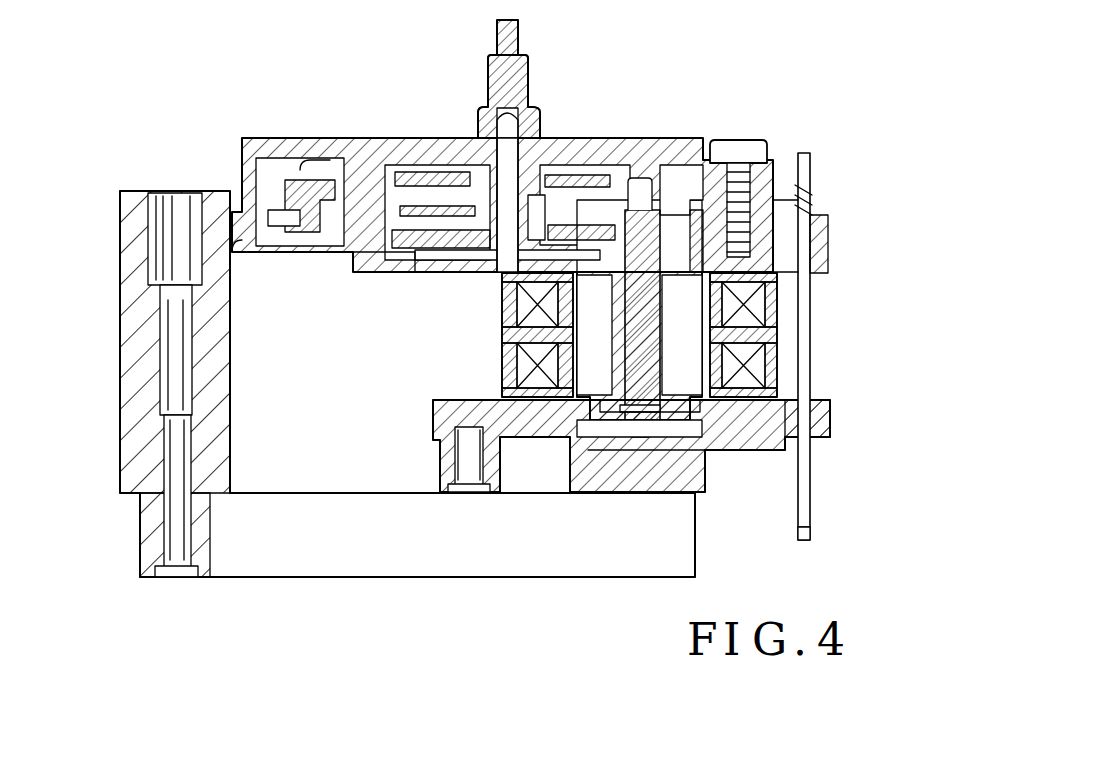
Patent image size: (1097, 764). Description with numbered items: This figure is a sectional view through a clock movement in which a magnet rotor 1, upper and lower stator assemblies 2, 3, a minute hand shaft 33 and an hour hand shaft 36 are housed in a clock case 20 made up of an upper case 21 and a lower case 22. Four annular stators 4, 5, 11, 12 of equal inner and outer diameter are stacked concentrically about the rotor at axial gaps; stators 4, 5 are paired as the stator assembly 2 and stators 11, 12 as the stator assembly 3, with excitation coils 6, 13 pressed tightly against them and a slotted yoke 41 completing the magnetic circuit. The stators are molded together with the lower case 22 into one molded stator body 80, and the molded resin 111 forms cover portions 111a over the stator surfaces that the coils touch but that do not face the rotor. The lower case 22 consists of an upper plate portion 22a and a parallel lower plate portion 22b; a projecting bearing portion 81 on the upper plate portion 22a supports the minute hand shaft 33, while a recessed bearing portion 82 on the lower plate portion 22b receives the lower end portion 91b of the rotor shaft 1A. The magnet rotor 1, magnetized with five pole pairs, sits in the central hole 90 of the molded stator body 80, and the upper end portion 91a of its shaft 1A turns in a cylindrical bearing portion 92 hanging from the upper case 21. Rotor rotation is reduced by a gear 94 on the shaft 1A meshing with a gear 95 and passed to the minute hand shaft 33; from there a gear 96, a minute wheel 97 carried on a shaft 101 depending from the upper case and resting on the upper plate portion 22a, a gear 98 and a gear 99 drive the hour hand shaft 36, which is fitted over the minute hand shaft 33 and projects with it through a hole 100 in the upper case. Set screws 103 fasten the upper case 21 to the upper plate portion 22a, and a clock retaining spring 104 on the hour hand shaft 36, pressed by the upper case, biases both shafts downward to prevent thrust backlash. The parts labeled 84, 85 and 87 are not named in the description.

The magnet rotor 1 is at (586, 472).
The shaft 1A is at (650, 438).
The stator assembly 2 is at (878, 270).
The stator assembly 3 is at (897, 350).
The stator 4 is at (775, 278).
The stator 5 is at (760, 334).
The excitation coil 6 is at (535, 305).
The stator 11 is at (760, 352).
The stator 12 is at (775, 390).
The excitation coil 13 is at (535, 368).
The clock case 20 is at (195, 135).
The upper case 21 is at (250, 138).
The lower case 22 is at (228, 215).
The upper plate portion 22a is at (400, 272).
The lower plate portion 22b is at (433, 408).
The minute hand shaft 33 is at (515, 30).
The hour hand shaft 36 is at (528, 70).
The yoke 41 is at (515, 337).
The molded stator body 80 is at (540, 560).
The bearing portion 81 is at (505, 258).
The bearing portion 82 is at (610, 450).
The clamp block 84 is at (828, 245).
The rod 85 is at (808, 185).
The rod end 87 is at (812, 440).
The central hole 90 is at (735, 450).
The upper end portion 91a is at (642, 178).
The lower end portion 91b is at (640, 440).
The cylindrical bearing portion 92 is at (672, 170).
The gear 94 is at (700, 215).
The gear 95 is at (600, 225).
The gear 96 is at (540, 195).
The minute wheel 97 is at (445, 206).
The gear 98 is at (330, 165).
The gear 99 is at (418, 172).
The hole 100 is at (478, 160).
The shaft 101 is at (368, 248).
The set screw 103 is at (750, 140).
The clock retaining spring 104 is at (580, 175).
The molded resin 111 is at (770, 437).
The cover portion 111a is at (532, 440).